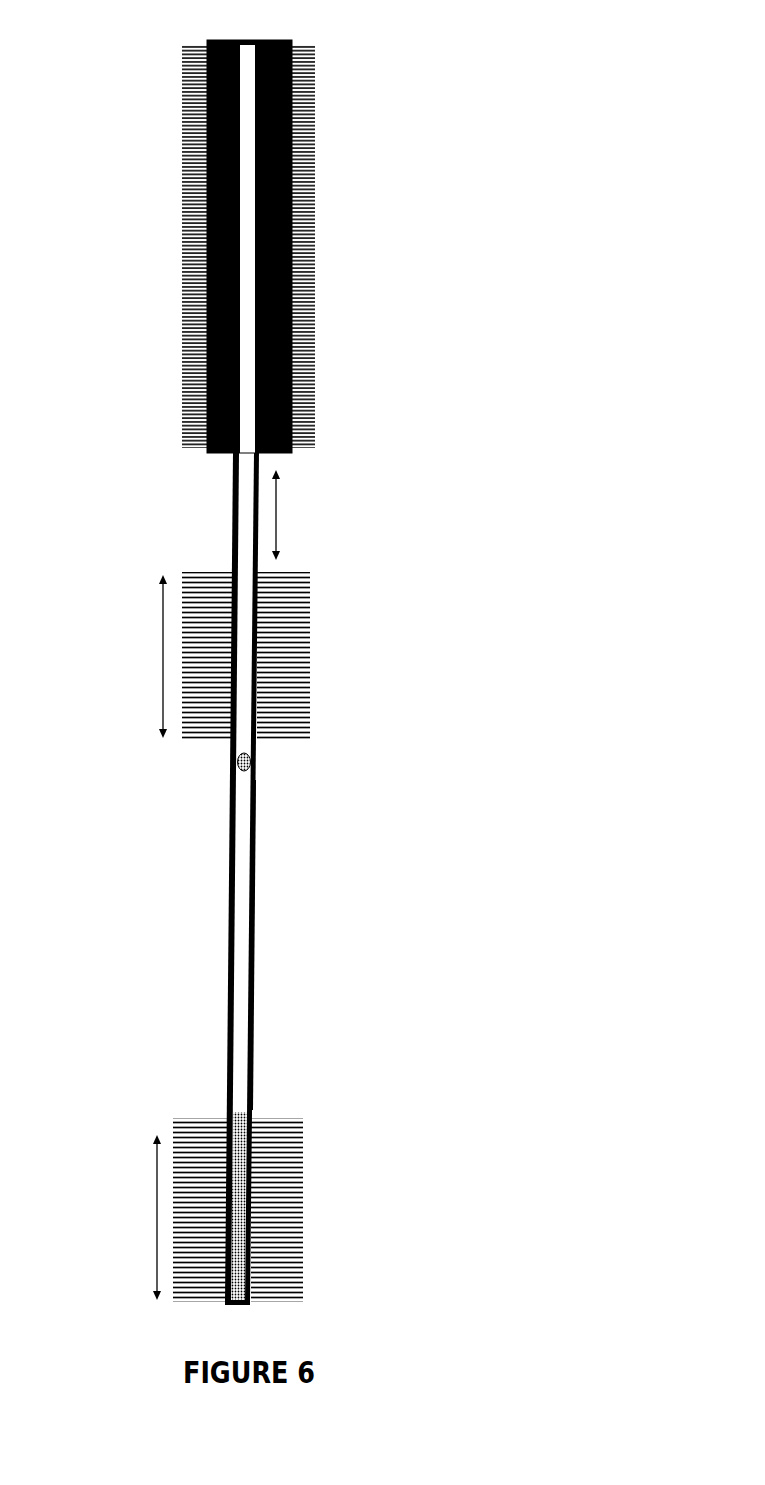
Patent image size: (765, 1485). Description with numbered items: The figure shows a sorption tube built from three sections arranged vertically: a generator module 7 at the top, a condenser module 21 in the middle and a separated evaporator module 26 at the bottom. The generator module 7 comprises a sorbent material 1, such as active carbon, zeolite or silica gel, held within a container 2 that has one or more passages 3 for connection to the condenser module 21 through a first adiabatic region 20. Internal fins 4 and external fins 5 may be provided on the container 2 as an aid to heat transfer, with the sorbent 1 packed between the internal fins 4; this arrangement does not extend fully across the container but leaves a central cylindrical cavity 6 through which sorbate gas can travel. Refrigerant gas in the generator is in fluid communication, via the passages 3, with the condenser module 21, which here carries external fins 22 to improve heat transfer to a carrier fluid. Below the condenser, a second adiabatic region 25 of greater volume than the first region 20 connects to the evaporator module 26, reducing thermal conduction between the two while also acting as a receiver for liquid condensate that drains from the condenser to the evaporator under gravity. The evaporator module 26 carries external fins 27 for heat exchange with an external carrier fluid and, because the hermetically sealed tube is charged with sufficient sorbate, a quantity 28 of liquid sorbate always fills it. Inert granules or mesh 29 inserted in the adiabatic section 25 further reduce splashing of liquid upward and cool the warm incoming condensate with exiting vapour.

The sorbent material 1 is at (293, 450).
The container 2 is at (290, 42).
The passage 3 is at (234, 475).
The internal fin 4 is at (310, 98).
The external fin 5 is at (295, 170).
The central cylindrical cavity 6 is at (204, 205).
The generator module 7 is at (206, 150).
The adiabatic region 20 is at (294, 515).
The condenser module 21 is at (145, 656).
The external fins 22 is at (273, 645).
The second adiabatic region 25 is at (267, 945).
The evaporator module 26 is at (138, 1217).
The external fins 27 is at (273, 1273).
The quantity of liquid sorbate 28 is at (252, 1173).
The inert granules or mesh 29 is at (253, 762).